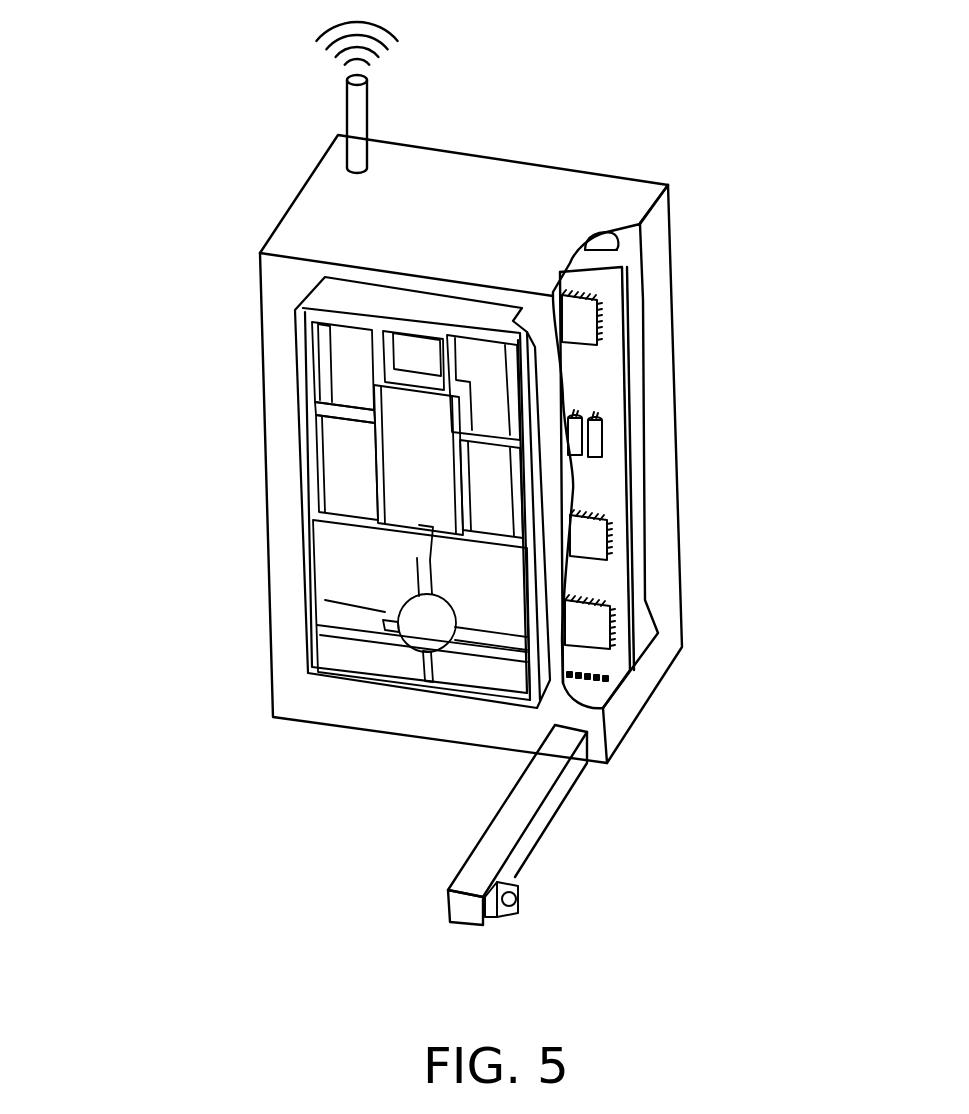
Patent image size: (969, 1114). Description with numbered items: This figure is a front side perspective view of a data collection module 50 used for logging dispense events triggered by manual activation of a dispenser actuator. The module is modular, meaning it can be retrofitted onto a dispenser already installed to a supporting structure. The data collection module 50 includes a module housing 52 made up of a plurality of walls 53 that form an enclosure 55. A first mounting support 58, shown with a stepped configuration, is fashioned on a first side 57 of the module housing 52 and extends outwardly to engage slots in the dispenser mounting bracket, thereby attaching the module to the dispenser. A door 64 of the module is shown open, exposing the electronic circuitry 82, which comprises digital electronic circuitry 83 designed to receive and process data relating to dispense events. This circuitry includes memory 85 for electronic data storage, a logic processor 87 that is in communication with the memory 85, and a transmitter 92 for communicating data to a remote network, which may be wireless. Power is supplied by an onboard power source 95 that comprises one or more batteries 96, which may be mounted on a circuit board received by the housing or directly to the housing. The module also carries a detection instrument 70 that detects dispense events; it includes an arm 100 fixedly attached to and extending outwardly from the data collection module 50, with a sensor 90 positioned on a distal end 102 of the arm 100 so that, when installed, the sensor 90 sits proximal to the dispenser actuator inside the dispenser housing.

The data collection module 50 is at (210, 277).
The module housing 52 is at (493, 163).
The walls 53 is at (440, 223).
The enclosure 55 is at (440, 163).
The first side 57 is at (340, 765).
The first mounting support 58 is at (347, 298).
The door 64 is at (715, 499).
The detection instrument 70 is at (592, 835).
The electronic circuitry 82 is at (628, 532).
The digital electronic circuitry 83 is at (630, 557).
The memory 85 is at (586, 524).
The logic processor 87 is at (590, 620).
The sensor 90 is at (512, 898).
The transmitter 92 is at (572, 320).
The onboard power source 95 is at (617, 255).
The batteries 96 is at (612, 233).
The arm 100 is at (533, 795).
The distal end 102 is at (426, 905).